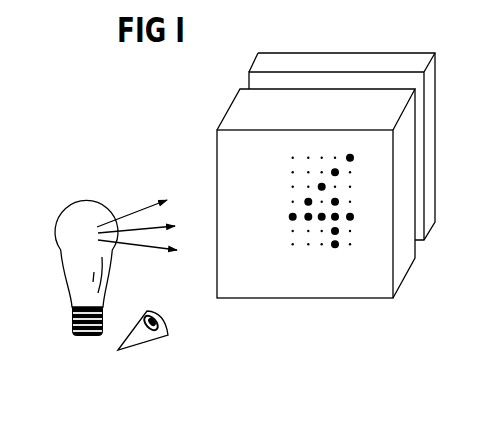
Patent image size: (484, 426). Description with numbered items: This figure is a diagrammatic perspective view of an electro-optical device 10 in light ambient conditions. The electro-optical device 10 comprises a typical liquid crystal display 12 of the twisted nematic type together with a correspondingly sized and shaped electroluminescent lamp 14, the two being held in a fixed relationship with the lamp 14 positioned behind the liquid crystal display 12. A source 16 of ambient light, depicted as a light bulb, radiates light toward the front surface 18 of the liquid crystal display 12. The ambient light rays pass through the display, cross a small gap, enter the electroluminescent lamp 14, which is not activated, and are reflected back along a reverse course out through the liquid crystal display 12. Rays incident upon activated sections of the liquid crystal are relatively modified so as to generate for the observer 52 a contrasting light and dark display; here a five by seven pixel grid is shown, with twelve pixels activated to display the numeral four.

The electro-optical device 10 is at (172, 97).
The liquid crystal display 12 is at (217, 158).
The electroluminescent lamp 14 is at (303, 53).
The source of ambient light 16 is at (82, 217).
The front surface 18 is at (308, 283).
The observer 52 is at (196, 350).